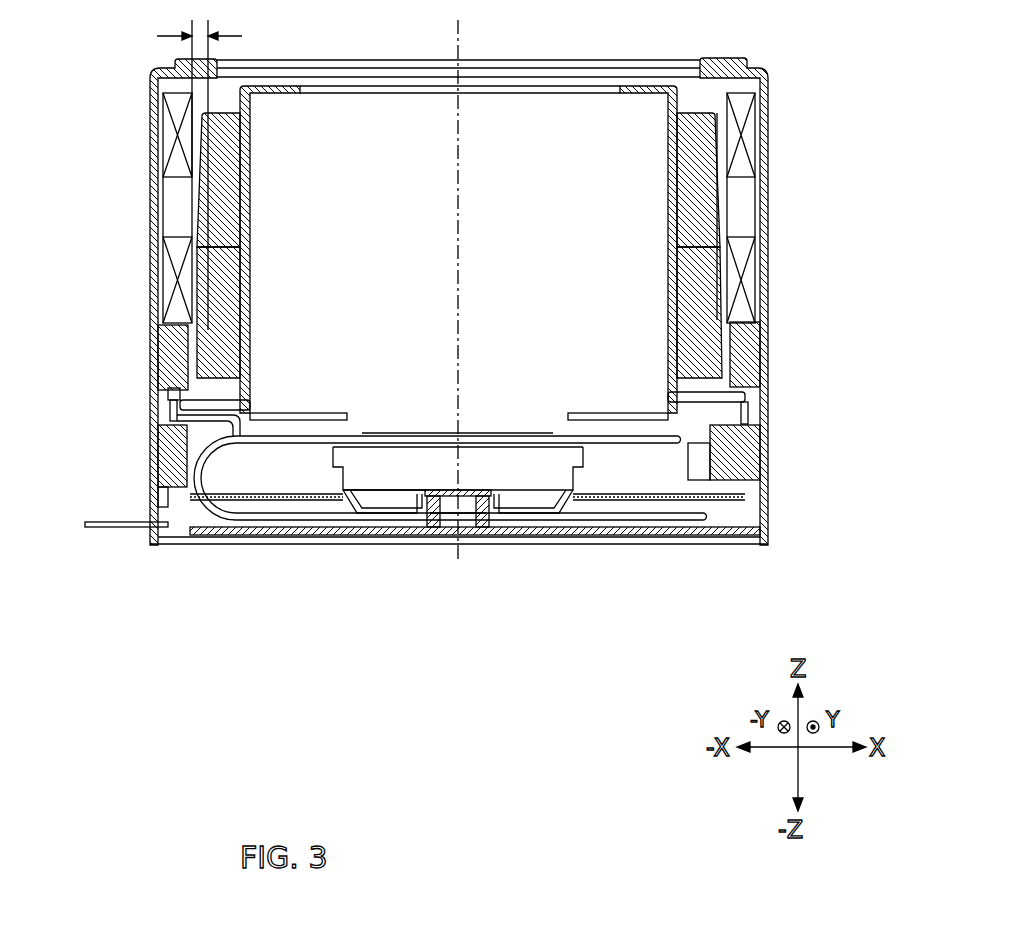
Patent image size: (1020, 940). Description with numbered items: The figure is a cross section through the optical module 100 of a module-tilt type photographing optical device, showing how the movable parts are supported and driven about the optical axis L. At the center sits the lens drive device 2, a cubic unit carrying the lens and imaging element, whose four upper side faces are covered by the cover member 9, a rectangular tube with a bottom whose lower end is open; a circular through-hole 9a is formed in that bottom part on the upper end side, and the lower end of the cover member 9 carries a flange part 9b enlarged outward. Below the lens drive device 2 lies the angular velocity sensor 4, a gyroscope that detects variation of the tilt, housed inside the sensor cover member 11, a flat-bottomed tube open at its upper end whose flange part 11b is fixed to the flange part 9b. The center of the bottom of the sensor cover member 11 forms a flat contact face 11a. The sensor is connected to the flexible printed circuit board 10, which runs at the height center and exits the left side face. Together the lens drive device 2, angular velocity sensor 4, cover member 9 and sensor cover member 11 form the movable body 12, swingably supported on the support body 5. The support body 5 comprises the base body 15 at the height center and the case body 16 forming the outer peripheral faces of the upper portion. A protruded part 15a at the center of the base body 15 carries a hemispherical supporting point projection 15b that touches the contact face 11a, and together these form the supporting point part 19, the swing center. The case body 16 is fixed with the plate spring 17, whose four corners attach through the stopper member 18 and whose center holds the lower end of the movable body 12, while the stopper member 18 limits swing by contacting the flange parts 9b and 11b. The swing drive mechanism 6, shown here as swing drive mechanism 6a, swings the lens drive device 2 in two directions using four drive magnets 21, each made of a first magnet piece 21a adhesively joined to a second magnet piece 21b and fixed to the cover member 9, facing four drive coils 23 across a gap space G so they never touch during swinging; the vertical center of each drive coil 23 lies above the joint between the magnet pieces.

The optical module 100 is at (459, 301).
The swing drive mechanism 6 is at (403, 301).
The swing drive mechanism 6a is at (140, 267).
The movable body 12 is at (272, 82).
The lens drive device 2 is at (563, 92).
The cover member 9 is at (461, 255).
The through-hole 9a is at (297, 94).
The flange part 9b is at (178, 407).
The drive magnet 21 is at (461, 199).
The first magnet piece 21a is at (205, 190).
The second magnet piece 21b is at (202, 268).
The drive coil 23 is at (162, 288).
The gap space G is at (199, 23).
The stopper member 18 is at (157, 367).
The sensor cover member 11 is at (461, 497).
The contact face 11a is at (474, 514).
The flange part 11b is at (170, 420).
The angular velocity sensor 4 is at (584, 458).
The supporting point part 19 is at (434, 477).
The support body 5 is at (521, 510).
The case body 16 is at (770, 463).
The base body 15 is at (506, 523).
The protruded part 15a is at (442, 528).
The supporting point projection 15b is at (464, 491).
The plate spring 17 is at (712, 501).
The flexible printed circuit board 10 is at (102, 520).
The optical axis L is at (456, 24).